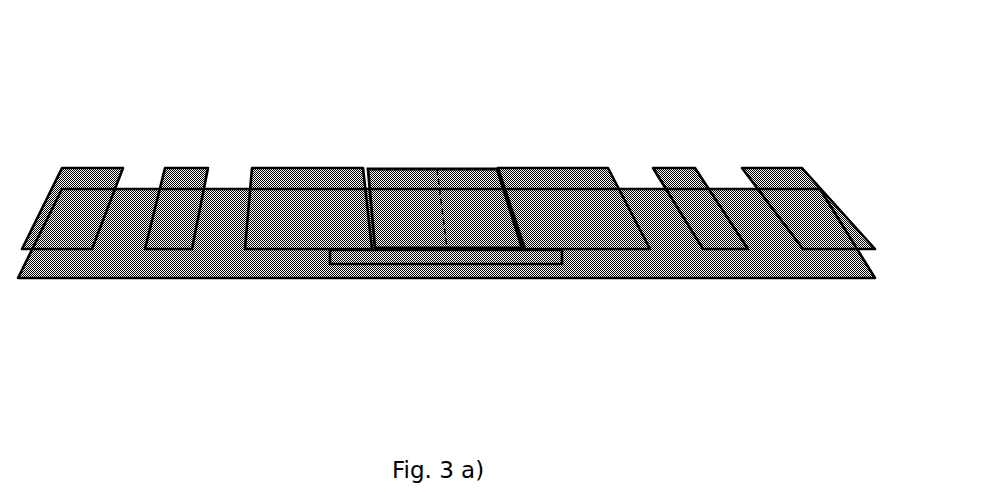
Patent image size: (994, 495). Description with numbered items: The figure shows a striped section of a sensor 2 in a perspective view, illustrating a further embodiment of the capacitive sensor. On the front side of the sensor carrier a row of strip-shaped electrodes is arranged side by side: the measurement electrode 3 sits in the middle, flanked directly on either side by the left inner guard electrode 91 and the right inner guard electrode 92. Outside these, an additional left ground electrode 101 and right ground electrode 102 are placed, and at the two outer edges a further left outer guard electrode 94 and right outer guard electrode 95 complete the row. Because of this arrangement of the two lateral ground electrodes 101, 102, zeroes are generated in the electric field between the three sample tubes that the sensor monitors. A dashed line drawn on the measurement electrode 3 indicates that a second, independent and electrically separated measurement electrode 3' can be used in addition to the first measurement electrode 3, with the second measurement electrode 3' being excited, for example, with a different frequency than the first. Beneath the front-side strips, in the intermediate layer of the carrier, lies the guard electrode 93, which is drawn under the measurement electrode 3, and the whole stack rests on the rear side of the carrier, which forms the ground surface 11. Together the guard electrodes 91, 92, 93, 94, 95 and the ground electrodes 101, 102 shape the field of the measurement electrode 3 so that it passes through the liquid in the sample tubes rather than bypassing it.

The sensor 2 is at (459, 215).
The measurement electrode 3 is at (445, 182).
The second measurement electrode 3' is at (457, 182).
The ground surface 11 is at (110, 264).
The left inner guard electrode 91 is at (298, 176).
The right inner guard electrode 92 is at (564, 180).
The guard electrode 93 is at (430, 279).
The left outer guard electrode 94 is at (89, 174).
The right outer guard electrode 95 is at (781, 176).
The left ground electrode 101 is at (178, 174).
The right ground electrode 102 is at (675, 176).